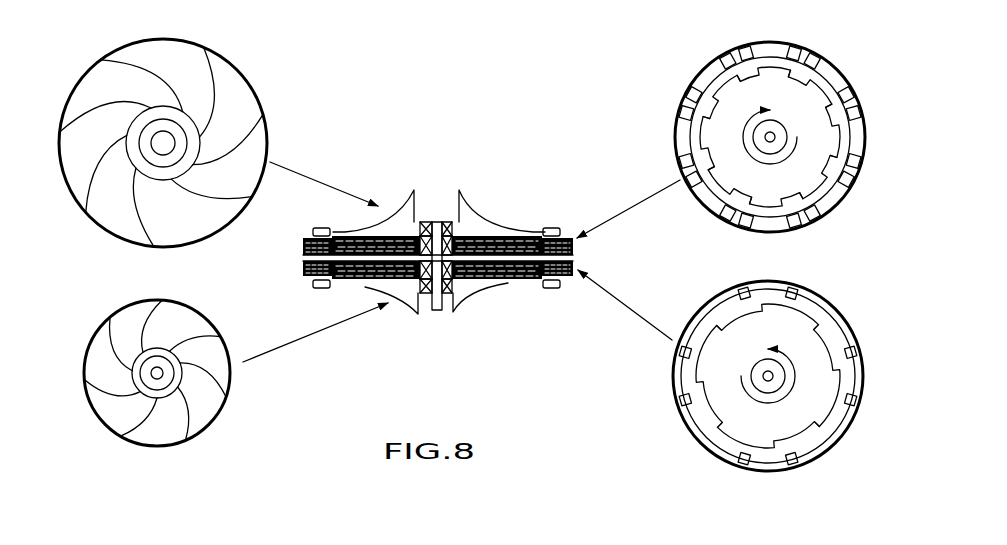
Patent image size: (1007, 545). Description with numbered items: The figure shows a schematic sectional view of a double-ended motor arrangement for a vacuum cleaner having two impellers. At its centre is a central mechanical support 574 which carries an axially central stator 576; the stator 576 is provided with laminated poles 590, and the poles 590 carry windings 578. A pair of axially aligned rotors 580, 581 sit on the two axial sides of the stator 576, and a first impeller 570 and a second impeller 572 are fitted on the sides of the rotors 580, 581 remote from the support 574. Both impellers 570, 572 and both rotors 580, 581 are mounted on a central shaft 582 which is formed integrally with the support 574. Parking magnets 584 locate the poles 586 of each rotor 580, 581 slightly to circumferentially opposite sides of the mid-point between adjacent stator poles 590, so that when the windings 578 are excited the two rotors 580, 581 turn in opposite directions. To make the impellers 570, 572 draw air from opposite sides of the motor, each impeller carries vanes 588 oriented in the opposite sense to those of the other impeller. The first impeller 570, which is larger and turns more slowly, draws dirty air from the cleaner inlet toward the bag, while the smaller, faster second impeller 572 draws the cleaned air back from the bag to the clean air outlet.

The first impeller 570 is at (259, 88).
The second impeller 572 is at (228, 327).
The central mechanical support 574 is at (567, 256).
The stator 576 is at (568, 235).
The windings 578 is at (322, 232).
The first rotor 580 is at (387, 242).
The second rotor 581 is at (350, 270).
The central shaft 582 is at (437, 311).
The parking magnets 584 is at (752, 67).
The rotor poles 586 is at (803, 73).
The vanes 588 is at (213, 85).
The laminated poles 590 is at (770, 218).